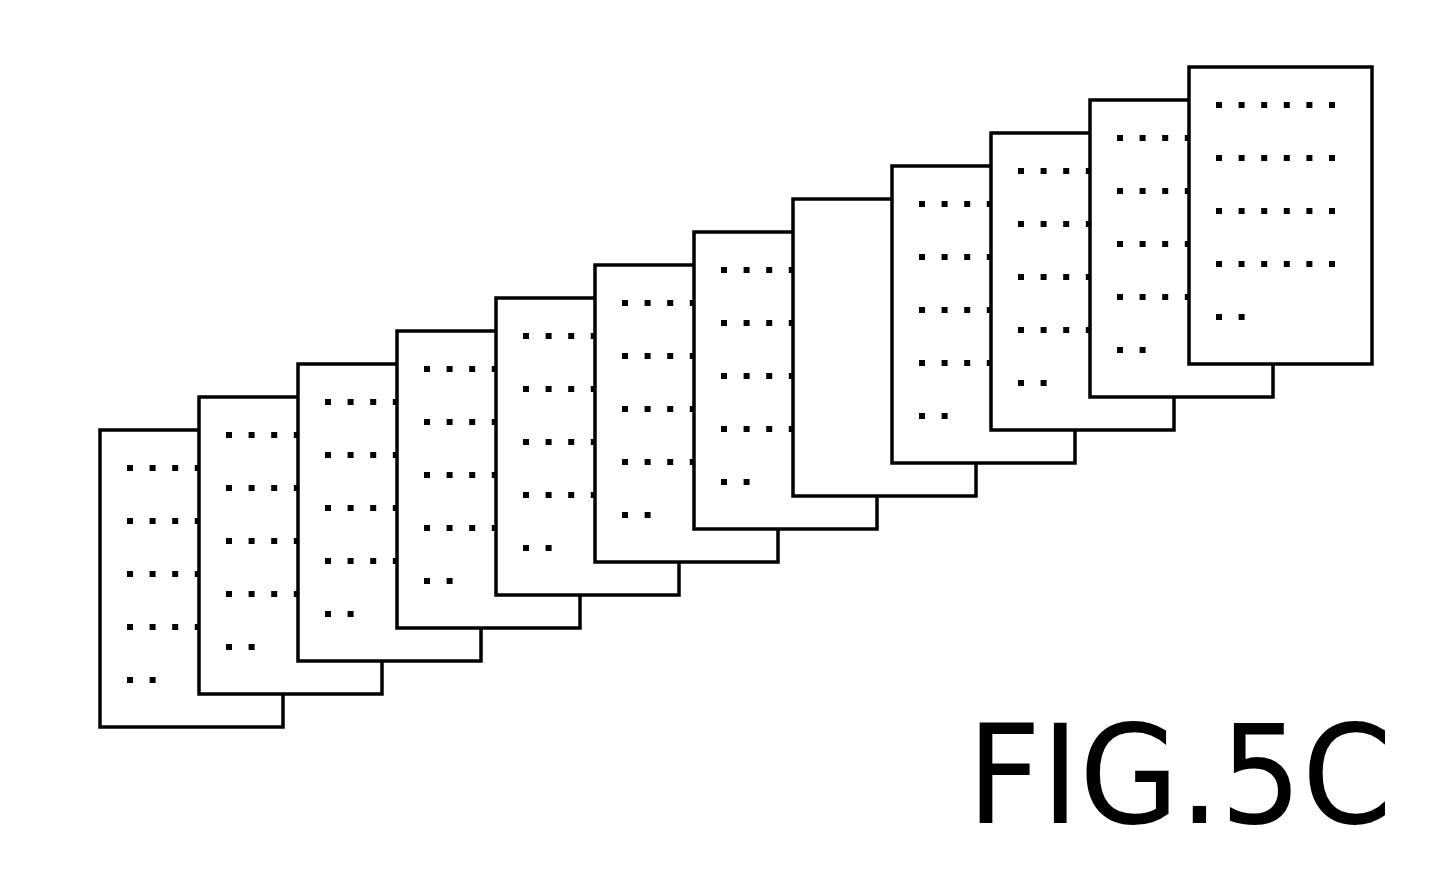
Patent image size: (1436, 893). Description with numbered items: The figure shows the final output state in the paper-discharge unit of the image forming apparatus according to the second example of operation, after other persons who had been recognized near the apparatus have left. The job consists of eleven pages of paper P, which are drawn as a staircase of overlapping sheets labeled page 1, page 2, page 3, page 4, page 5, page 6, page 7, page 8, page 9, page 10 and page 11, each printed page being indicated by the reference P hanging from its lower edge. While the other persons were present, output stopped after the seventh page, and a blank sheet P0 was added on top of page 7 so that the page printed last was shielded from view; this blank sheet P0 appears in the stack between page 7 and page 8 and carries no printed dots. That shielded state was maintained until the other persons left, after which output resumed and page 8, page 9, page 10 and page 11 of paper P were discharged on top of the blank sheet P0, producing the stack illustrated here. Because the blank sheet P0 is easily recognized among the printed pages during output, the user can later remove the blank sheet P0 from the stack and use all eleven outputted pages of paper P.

The page of paper 1 is at (191, 554).
The page of paper 2 is at (290, 521).
The page of paper 3 is at (389, 488).
The page of paper 4 is at (488, 455).
The page of paper 5 is at (587, 422).
The page of paper 6 is at (686, 389).
The page of paper 7 is at (785, 356).
The page of paper 8 is at (983, 290).
The page of paper 9 is at (1082, 257).
The page of paper 10 is at (1181, 224).
The page of paper 11 is at (1280, 191).
The paper P is at (239, 727).
The blank sheet P0 is at (950, 496).